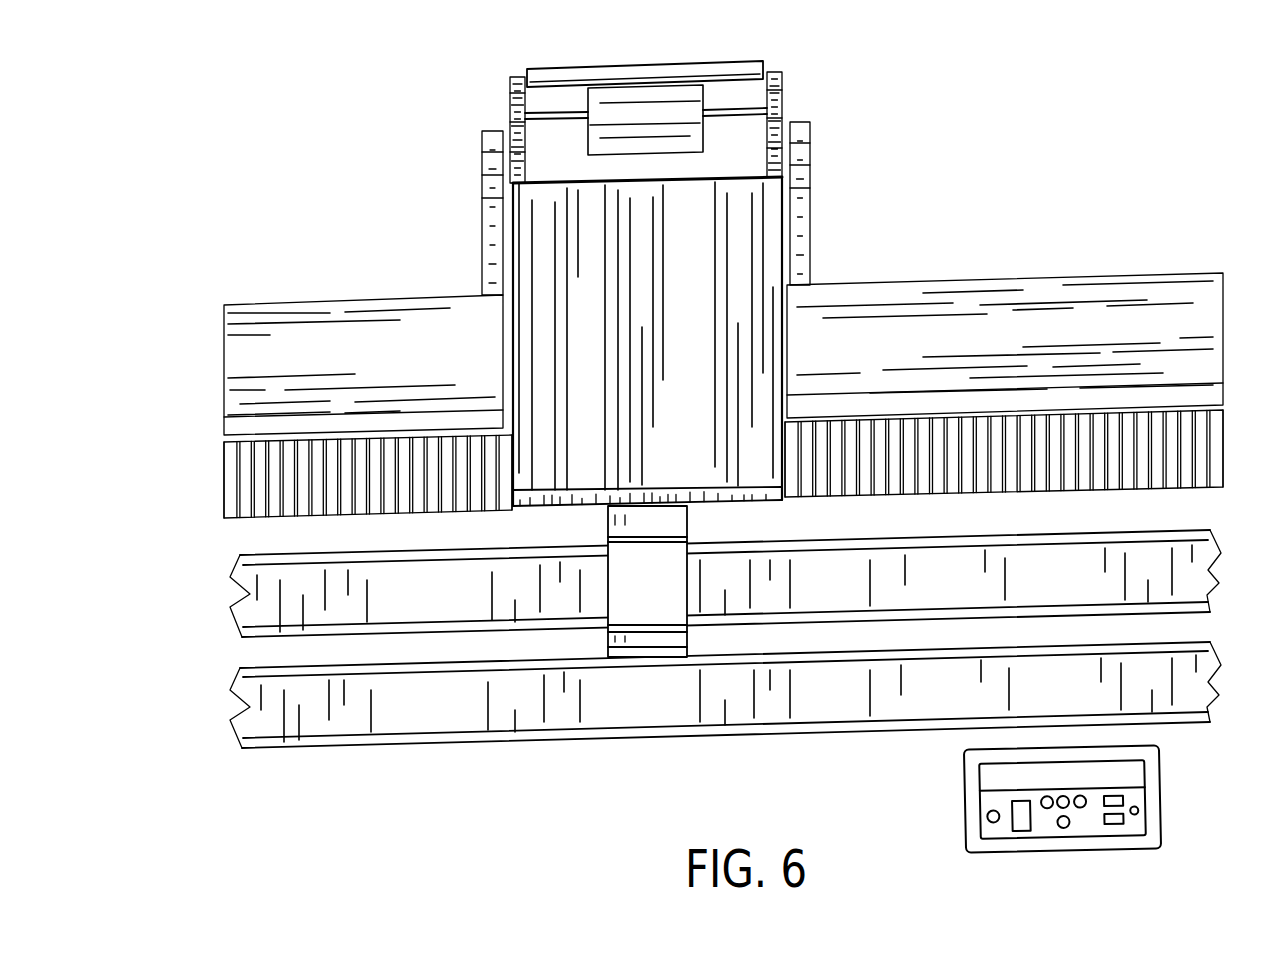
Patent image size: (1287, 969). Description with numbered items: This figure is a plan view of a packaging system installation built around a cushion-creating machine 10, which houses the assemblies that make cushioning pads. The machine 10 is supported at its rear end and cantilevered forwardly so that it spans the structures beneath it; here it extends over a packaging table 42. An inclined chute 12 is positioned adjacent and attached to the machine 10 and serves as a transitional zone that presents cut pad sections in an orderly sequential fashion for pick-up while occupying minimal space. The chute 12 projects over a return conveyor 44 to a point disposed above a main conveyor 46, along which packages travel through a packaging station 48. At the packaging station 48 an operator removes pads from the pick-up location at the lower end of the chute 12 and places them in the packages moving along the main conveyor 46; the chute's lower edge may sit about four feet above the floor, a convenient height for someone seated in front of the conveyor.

The cushion-creating machine 10 is at (690, 300).
The inclined chute 12 is at (647, 583).
The packaging table 42 is at (998, 335).
The return conveyor 44 is at (305, 587).
The main conveyor 46 is at (437, 706).
The packaging station 48 is at (633, 758).